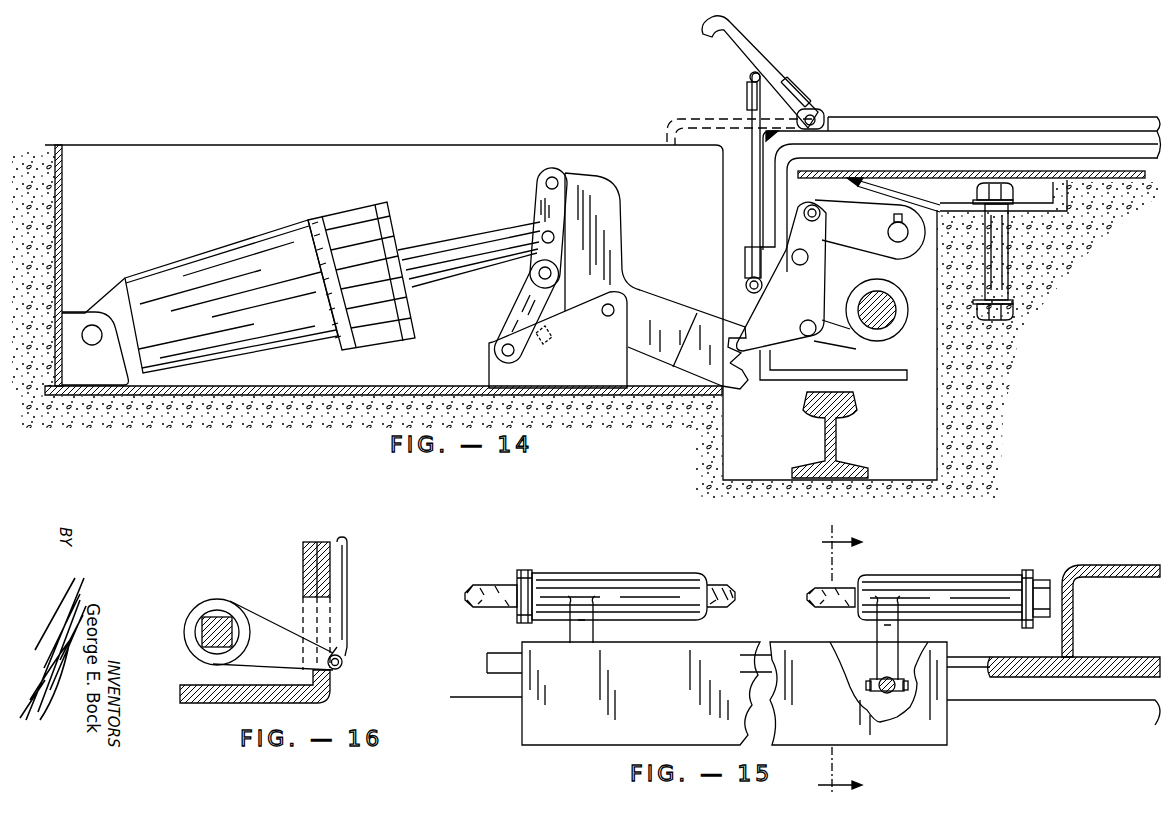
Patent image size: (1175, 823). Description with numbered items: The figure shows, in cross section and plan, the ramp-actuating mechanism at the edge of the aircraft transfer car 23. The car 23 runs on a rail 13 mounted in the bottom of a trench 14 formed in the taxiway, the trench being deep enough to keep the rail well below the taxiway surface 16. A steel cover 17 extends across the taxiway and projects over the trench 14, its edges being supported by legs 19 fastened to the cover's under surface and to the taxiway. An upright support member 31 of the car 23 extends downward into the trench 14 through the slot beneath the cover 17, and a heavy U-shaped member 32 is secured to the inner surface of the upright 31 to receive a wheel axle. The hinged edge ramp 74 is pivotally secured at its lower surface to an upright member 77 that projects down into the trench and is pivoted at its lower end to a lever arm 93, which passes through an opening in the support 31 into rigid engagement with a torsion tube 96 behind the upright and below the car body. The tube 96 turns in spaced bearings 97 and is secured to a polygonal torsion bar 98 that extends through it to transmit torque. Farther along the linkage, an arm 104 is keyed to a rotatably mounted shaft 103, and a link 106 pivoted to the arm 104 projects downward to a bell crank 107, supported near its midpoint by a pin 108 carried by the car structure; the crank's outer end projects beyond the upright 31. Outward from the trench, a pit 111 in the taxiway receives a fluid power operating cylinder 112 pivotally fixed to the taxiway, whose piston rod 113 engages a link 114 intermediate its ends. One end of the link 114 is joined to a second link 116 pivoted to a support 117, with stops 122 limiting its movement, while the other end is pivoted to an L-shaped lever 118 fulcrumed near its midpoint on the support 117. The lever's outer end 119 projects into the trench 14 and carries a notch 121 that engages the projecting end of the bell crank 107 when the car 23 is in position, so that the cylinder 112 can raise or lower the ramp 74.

In FIG. 14, the rail 13 is at (845, 405).
In FIG. 14, the trench 14 is at (918, 440).
In FIG. 14, the taxiway surface 16 is at (40, 143).
In FIG. 15, the taxiway surface 16 is at (840, 655).
In FIG. 14, the cover 17 is at (1105, 179).
In FIG. 14, the leg 19 is at (1040, 208).
In FIG. 14, the car 23 is at (1047, 110).
In FIG. 14, the upright support member 31 is at (772, 200).
In FIG. 16, the upright support member 31 is at (305, 565).
In FIG. 15, the upright support member 31 is at (1010, 666).
In FIG. 15, the U-shaped member 32 is at (1095, 565).
In FIG. 14, the edge ramp 74 is at (757, 58).
In FIG. 15, the edge ramp 74 is at (890, 730).
In FIG. 14, the upright member 77 is at (748, 135).
In FIG. 16, the upright member 77 is at (350, 545).
In FIG. 15, the upright member 77 is at (893, 680).
In FIG. 14, the lever arm 93 is at (831, 288).
In FIG. 16, the lever arm 93 is at (287, 638).
In FIG. 15, the lever arm 93 is at (585, 632).
In FIG. 14, the torsion tube 96 is at (885, 288).
In FIG. 16, the torsion tube 96 is at (225, 605).
In FIG. 15, the torsion tube 96 is at (972, 580).
In FIG. 15, the bearing 97 is at (525, 570).
In FIG. 14, the polygonal torsion bar 98 is at (885, 320).
In FIG. 16, the polygonal torsion bar 98 is at (208, 618).
In FIG. 15, the polygonal torsion bar 98 is at (718, 590).
In FIG. 14, the shaft 103 is at (895, 242).
In FIG. 14, the arm 104 is at (858, 181).
In FIG. 14, the link 106 is at (818, 222).
In FIG. 14, the bell crank 107 is at (780, 332).
In FIG. 14, the pin 108 is at (818, 332).
In FIG. 14, the pit 111 is at (445, 145).
In FIG. 14, the fluid power operating cylinder 112 is at (192, 275).
In FIG. 14, the piston rod 113 is at (434, 265).
In FIG. 14, the link 114 is at (540, 193).
In FIG. 14, the second link 116 is at (528, 297).
In FIG. 14, the support 117 is at (612, 378).
In FIG. 14, the L-shaped lever 118 is at (625, 218).
In FIG. 14, the outer end 119 is at (703, 323).
In FIG. 14, the notch 121 is at (737, 367).
In FIG. 14, the stop 122 is at (551, 338).